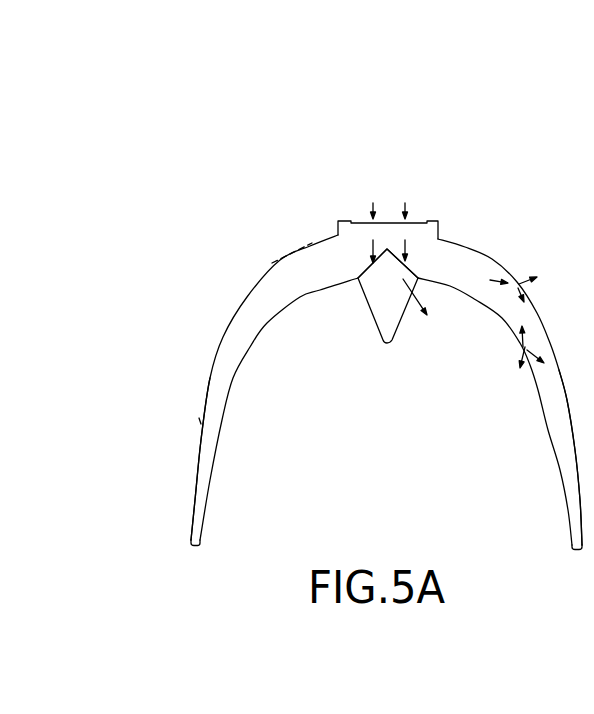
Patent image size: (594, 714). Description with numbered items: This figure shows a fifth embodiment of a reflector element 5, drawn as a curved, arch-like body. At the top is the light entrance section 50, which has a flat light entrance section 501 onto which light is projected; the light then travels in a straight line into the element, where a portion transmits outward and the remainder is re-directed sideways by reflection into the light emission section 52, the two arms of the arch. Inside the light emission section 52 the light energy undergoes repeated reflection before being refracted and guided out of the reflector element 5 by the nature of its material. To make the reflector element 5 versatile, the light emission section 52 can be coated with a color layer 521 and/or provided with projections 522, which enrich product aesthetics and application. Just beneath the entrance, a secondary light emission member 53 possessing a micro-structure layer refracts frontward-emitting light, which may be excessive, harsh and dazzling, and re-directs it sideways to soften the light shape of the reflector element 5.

The reflector element 5 is at (490, 217).
The light entrance section 50 is at (387, 223).
The flat light entrance section 501 is at (372, 262).
The light emission section 52 is at (560, 412).
The color layer 521 is at (287, 260).
The projections 522 is at (199, 404).
The secondary light emission member 53 is at (382, 305).